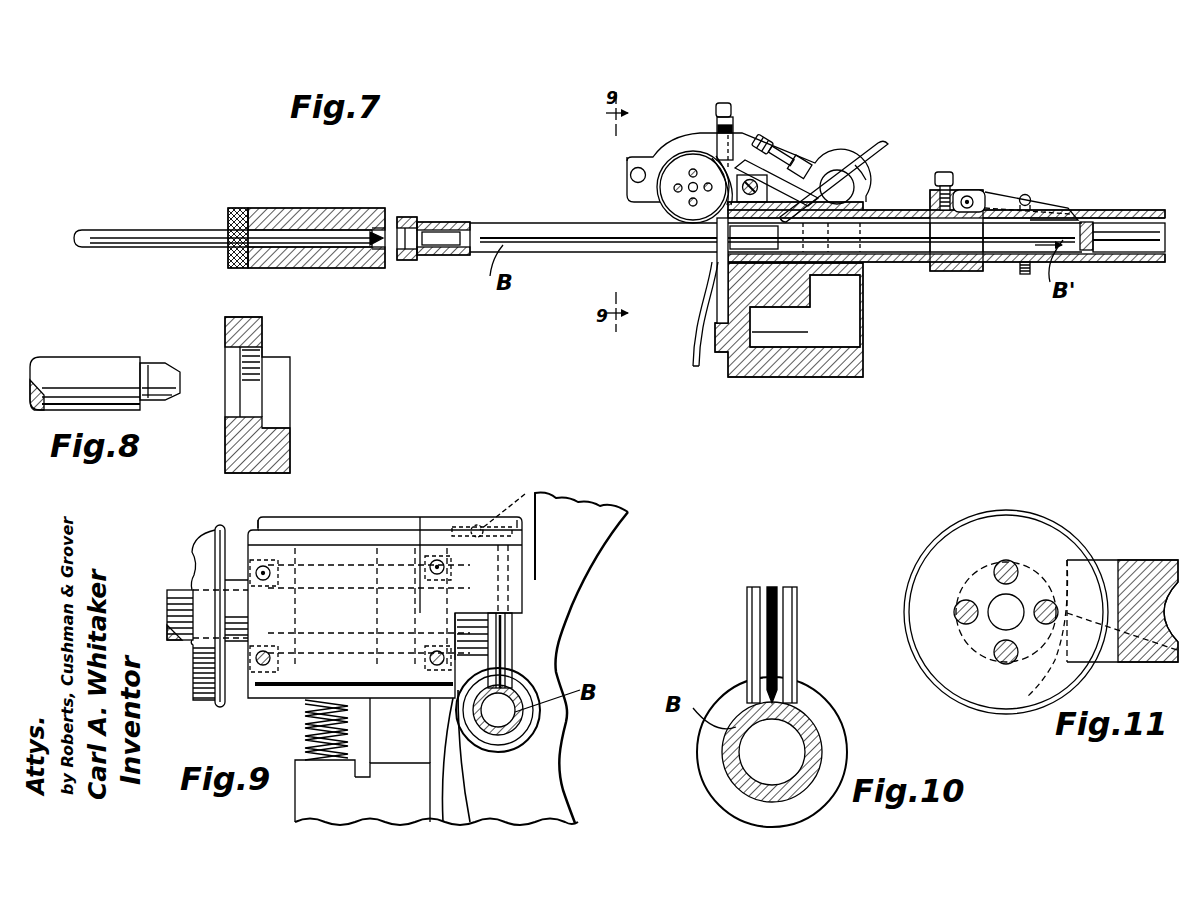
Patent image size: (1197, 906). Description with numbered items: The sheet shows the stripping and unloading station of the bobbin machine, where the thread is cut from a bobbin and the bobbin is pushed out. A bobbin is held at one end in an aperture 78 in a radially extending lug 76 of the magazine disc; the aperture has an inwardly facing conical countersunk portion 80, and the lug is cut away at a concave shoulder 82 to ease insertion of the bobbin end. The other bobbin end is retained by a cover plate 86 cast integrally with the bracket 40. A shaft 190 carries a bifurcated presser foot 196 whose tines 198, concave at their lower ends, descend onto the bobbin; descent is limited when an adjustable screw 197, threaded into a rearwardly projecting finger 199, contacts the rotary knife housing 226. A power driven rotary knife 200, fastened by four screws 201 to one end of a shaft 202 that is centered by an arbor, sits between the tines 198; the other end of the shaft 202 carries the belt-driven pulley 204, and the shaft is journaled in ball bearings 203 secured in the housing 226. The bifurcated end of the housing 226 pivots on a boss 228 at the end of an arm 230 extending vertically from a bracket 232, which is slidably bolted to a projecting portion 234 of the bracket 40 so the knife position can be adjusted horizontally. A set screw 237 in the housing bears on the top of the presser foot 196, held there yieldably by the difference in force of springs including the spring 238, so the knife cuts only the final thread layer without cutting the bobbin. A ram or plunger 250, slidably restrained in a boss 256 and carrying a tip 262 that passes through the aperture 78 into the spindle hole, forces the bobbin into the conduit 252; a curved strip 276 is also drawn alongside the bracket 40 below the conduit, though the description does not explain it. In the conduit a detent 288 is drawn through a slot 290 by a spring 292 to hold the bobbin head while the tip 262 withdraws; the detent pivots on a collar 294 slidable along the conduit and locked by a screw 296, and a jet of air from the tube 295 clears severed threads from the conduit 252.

In FIG. 7, the bracket 40 is at (848, 358).
In FIG. 9, the bracket 40 is at (568, 815).
In FIG. 7, the lug 76 is at (412, 262).
In FIG. 8, the lug 76 is at (290, 457).
In FIG. 8, the aperture 78 is at (234, 417).
In FIG. 8, the conical countersunk portion 80 is at (254, 418).
In FIG. 8, the cut-away shoulder 82 is at (278, 368).
In FIG. 9, the cover plate 86 is at (556, 790).
In FIG. 7, the shaft 190 is at (760, 185).
In FIG. 7, the presser foot 196 is at (708, 203).
In FIG. 9, the presser foot 196 is at (520, 618).
In FIG. 10, the presser foot 196 is at (800, 620).
In FIG. 11, the presser foot 196 is at (1118, 567).
In FIG. 7, the adjustable screw 197 is at (880, 147).
In FIG. 9, the adjustable screw 197 is at (540, 482).
In FIG. 7, the tines 198 is at (700, 228).
In FIG. 9, the tines 198 is at (508, 640).
In FIG. 10, the tines 198 is at (788, 653).
In FIG. 11, the tines 198 is at (1037, 713).
In FIG. 7, the finger 199 is at (764, 166).
In FIG. 9, the finger 199 is at (470, 527).
In FIG. 7, the rotary knife 200 is at (660, 188).
In FIG. 9, the rotary knife 200 is at (503, 665).
In FIG. 10, the rotary knife 200 is at (771, 587).
In FIG. 11, the rotary knife 200 is at (960, 533).
In FIG. 11, the screws 201 is at (968, 625).
In FIG. 9, the shaft 202 is at (325, 540).
In FIG. 11, the shaft 202 is at (1027, 552).
In FIG. 9, the ball bearings 203 is at (409, 696).
In FIG. 9, the pulley 204 is at (197, 572).
In FIG. 7, the rotary knife housing 226 is at (743, 135).
In FIG. 9, the rotary knife housing 226 is at (312, 518).
In FIG. 9, the boss 228 is at (437, 558).
In FIG. 9, the arm 230 is at (303, 722).
In FIG. 9, the bracket 232 is at (296, 800).
In FIG. 9, the projecting portion 234 is at (392, 792).
In FIG. 7, the set screw 237 is at (723, 102).
In FIG. 9, the spring 238 is at (348, 762).
In FIG. 7, the plunger 250 is at (135, 222).
In FIG. 8, the plunger 250 is at (62, 367).
In FIG. 7, the conduit 252 is at (900, 262).
In FIG. 7, the boss 256 is at (270, 212).
In FIG. 7, the tip 262 is at (374, 230).
In FIG. 8, the tip 262 is at (158, 372).
In FIG. 7, the spring strip 276 is at (692, 347).
In FIG. 7, the detent 288 is at (1053, 207).
In FIG. 7, the slot 290 is at (1082, 211).
In FIG. 7, the spring 292 is at (1027, 195).
In FIG. 7, the collar 294 is at (963, 272).
In FIG. 7, the tube 295 is at (866, 168).
In FIG. 7, the screw 296 is at (958, 160).